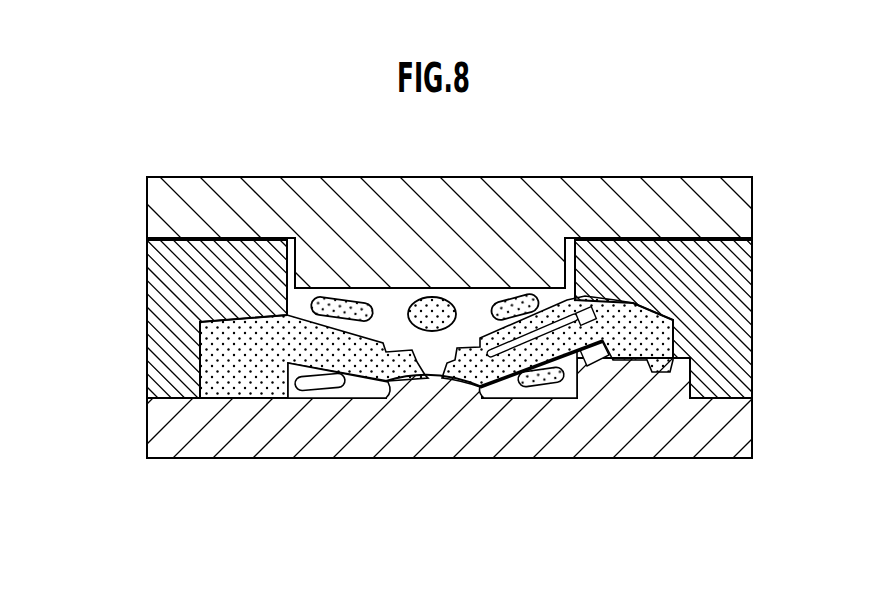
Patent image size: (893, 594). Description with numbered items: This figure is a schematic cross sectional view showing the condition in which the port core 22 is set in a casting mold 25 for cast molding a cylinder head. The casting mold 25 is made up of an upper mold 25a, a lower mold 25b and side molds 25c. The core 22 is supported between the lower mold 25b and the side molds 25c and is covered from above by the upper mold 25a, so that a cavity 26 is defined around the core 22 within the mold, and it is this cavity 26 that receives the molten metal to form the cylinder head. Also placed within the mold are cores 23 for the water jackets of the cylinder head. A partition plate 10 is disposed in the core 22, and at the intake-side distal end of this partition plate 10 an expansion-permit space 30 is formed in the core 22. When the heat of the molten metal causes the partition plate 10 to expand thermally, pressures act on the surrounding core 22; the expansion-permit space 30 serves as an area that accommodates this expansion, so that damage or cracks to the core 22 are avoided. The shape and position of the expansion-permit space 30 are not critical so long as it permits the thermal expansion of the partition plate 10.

The partition plate 10 is at (597, 344).
The core 22 is at (463, 368).
The cores for water jackets 23 is at (446, 300).
The casting mold 25 is at (77, 183).
The upper mold 25a is at (162, 207).
The lower mold 25b is at (165, 437).
The side molds 25c is at (162, 296).
The cavity 26 is at (386, 304).
The expansion-permit space 30 is at (601, 310).